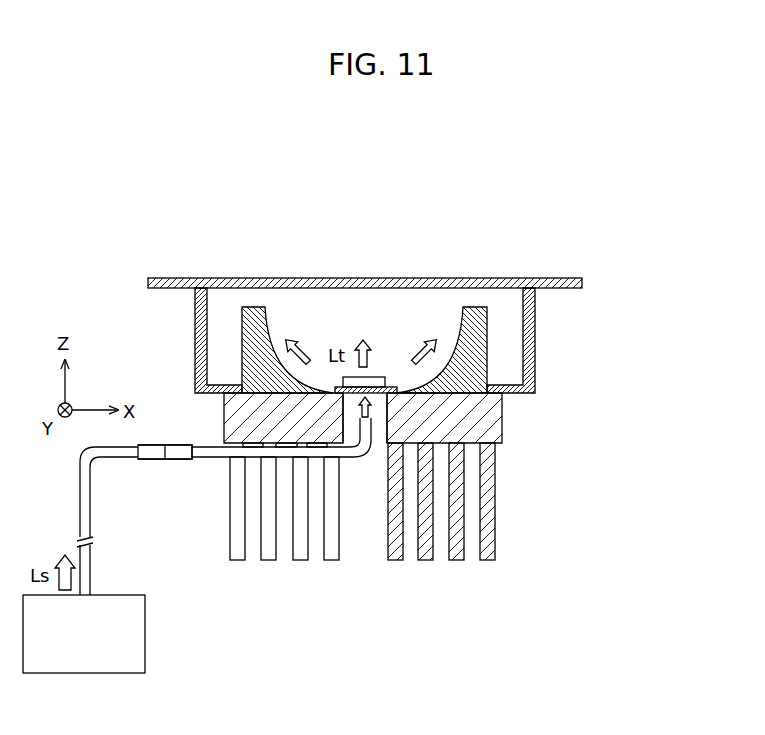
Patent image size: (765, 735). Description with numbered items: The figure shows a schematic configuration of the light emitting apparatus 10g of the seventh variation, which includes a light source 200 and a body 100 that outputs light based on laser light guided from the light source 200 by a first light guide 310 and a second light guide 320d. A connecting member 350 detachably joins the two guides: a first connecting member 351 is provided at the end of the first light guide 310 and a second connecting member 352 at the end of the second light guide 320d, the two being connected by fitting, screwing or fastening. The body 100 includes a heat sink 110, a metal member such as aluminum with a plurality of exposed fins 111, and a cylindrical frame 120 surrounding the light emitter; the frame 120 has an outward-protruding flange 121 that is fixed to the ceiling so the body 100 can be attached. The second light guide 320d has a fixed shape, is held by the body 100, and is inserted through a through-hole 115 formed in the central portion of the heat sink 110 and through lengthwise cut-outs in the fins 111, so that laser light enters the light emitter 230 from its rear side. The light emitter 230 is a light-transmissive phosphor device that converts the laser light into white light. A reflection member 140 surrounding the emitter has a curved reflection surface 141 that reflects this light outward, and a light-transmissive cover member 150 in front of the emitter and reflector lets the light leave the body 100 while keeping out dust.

The light emitting apparatus 10g is at (616, 242).
The cover member 150 is at (462, 277).
The flange 121 is at (560, 288).
The frame 120 is at (535, 335).
The reflection member 140 is at (307, 344).
The reflection surface 141 is at (454, 332).
The light emitter 230 is at (377, 366).
The through-hole 115 is at (377, 410).
The heat sink 110 is at (502, 428).
The fins 111 is at (425, 562).
The body 100 is at (514, 519).
The second light guide 320d is at (347, 458).
The connecting member 350 is at (155, 504).
The first connecting member 351 is at (150, 462).
The second connecting member 352 is at (178, 462).
The first light guide 310 is at (78, 515).
The light source 200 is at (145, 640).